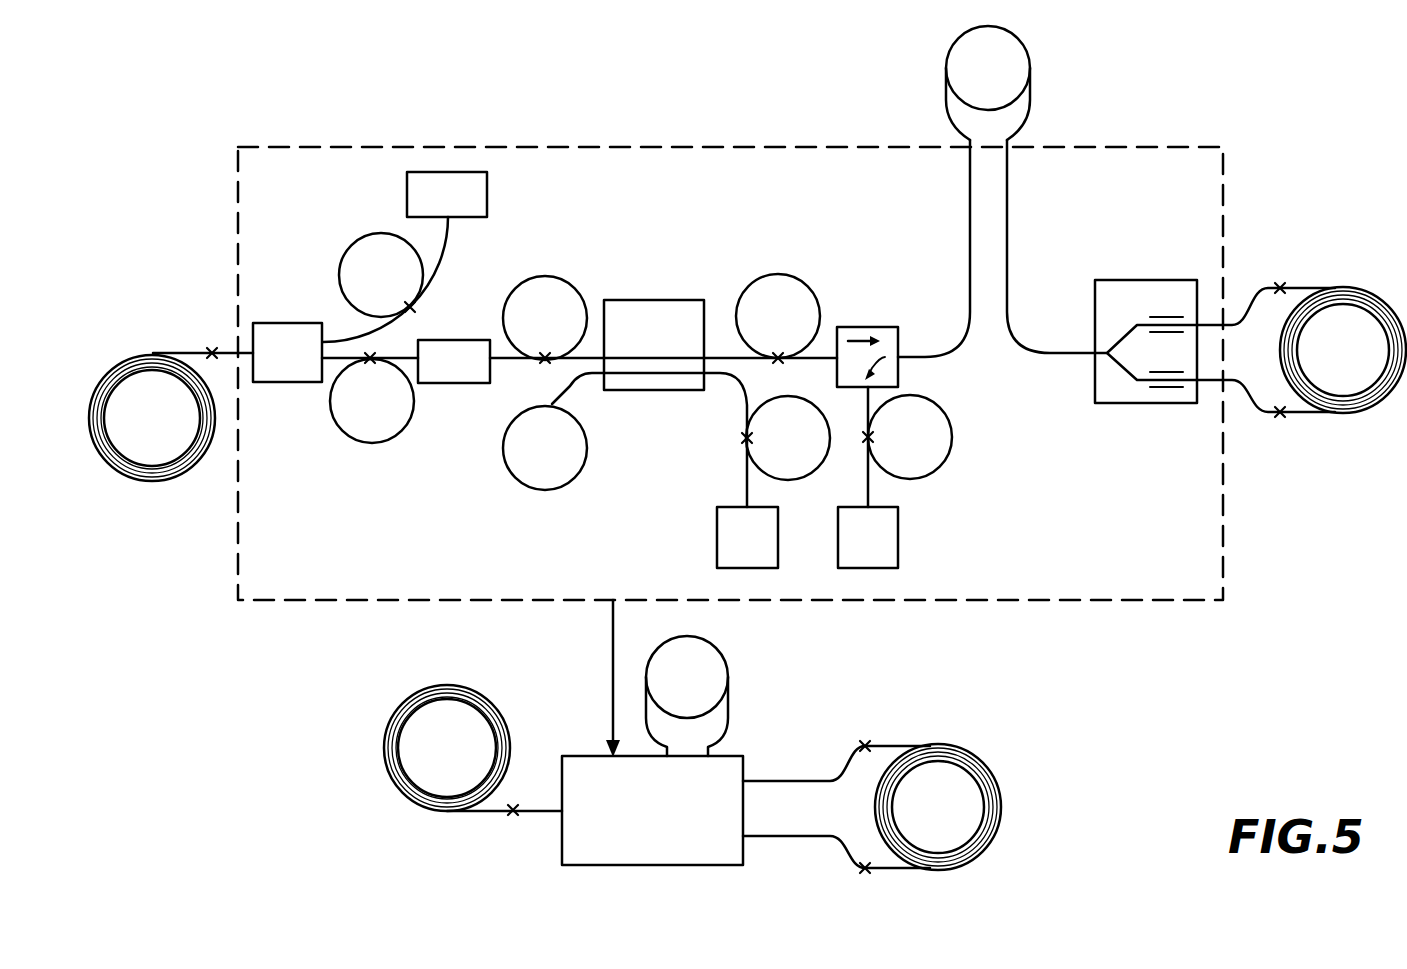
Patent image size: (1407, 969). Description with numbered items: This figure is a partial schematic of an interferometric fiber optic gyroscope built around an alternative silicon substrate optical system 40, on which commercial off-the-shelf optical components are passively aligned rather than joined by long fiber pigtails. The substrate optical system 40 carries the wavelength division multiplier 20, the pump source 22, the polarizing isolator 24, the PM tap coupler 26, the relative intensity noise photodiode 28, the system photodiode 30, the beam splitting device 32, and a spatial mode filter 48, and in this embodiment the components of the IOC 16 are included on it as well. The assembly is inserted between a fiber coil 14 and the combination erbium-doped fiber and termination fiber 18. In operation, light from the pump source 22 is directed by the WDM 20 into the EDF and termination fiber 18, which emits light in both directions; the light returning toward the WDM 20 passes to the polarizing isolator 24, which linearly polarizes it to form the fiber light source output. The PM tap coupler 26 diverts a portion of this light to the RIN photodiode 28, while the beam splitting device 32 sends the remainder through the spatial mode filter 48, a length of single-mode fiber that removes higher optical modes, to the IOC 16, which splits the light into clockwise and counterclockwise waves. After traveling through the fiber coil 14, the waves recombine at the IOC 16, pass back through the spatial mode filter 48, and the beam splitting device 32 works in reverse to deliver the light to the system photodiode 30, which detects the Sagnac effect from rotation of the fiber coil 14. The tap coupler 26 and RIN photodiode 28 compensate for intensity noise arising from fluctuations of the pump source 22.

The fiber coil 14 is at (1368, 287).
The IOC 16 is at (1127, 280).
The combination erbium-doped fiber (EDF) and termination fiber 18 is at (125, 477).
The wavelength division multiplier (WDM) 20 is at (292, 323).
The pump source 22 is at (487, 190).
The polarizing isolator (PISO) 24 is at (447, 340).
The PM tap coupler 26 is at (677, 300).
The relative intensity noise (RIN) photodiode 28 is at (717, 525).
The system photodiode 30 is at (898, 525).
The beam splitting device 32 is at (870, 327).
The silicon substrate optical system 40 is at (297, 601).
The spatial mode filter 48 is at (1027, 50).